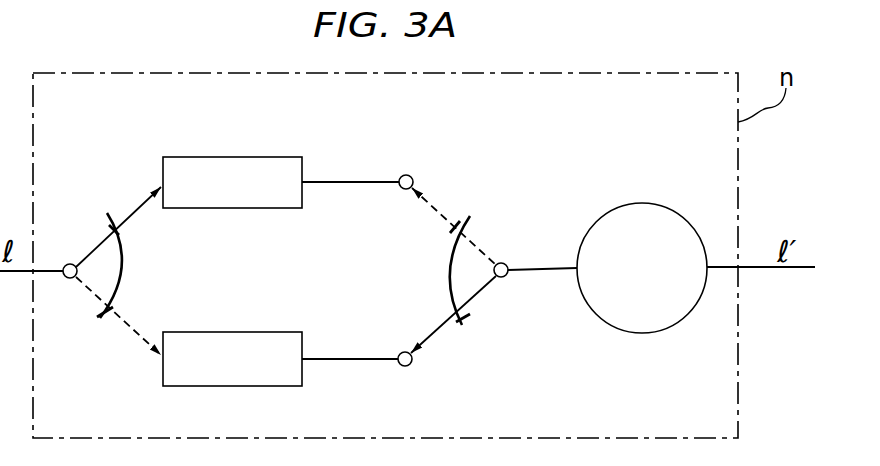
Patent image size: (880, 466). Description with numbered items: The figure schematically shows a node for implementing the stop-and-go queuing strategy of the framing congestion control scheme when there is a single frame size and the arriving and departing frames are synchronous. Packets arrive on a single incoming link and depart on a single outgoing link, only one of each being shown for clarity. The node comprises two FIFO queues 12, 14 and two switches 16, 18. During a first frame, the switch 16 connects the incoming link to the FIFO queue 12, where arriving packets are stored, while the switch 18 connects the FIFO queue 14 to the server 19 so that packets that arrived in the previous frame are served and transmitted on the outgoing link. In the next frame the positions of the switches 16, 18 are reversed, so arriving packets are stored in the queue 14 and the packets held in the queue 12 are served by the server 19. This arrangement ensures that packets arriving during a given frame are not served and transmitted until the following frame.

The FIFO queue 12 is at (281, 157).
The FIFO queue 14 is at (281, 332).
The switch 16 is at (69, 262).
The switch 18 is at (506, 264).
The server 19 is at (676, 210).